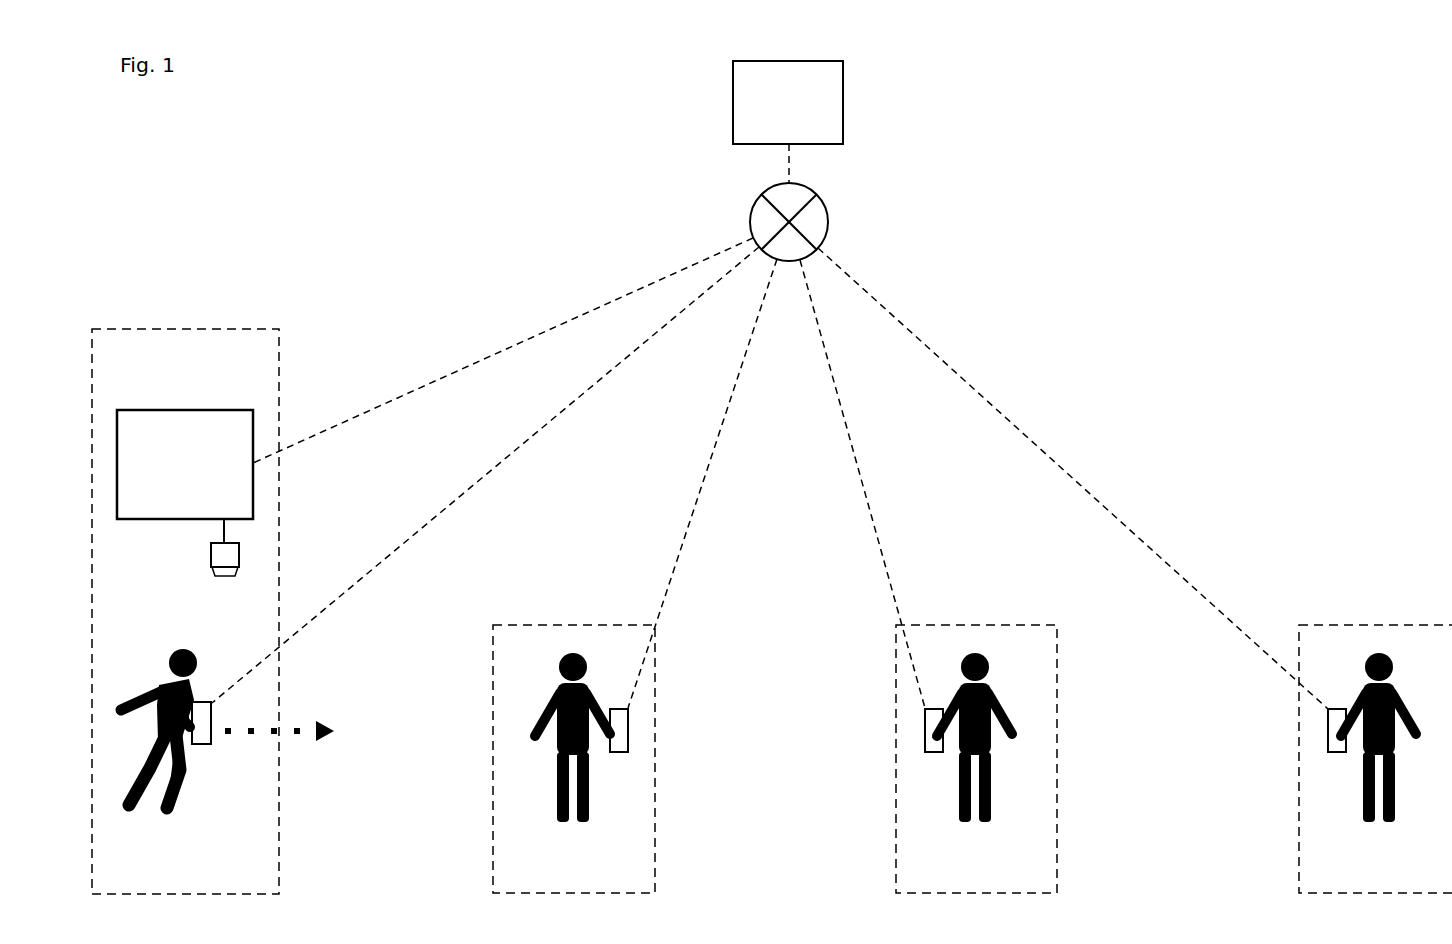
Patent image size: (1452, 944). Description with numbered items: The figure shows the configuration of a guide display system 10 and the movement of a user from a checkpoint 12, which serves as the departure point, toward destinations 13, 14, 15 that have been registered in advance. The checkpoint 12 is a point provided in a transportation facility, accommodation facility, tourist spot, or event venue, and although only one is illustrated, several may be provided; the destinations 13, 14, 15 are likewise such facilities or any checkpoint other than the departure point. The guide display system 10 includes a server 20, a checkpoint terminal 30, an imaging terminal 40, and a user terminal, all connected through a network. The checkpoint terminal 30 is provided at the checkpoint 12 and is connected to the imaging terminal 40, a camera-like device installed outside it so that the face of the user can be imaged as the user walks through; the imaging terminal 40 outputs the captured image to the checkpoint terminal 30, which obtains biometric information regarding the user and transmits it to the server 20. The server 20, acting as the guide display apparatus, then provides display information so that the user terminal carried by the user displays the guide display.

The guide display system 10 is at (719, 420).
The checkpoint 12 is at (186, 329).
The destination 13 is at (578, 625).
The destination 14 is at (976, 625).
The destination 15 is at (1378, 625).
The server 20 is at (789, 60).
The checkpoint terminal 30 is at (186, 410).
The imaging terminal 40 is at (240, 555).